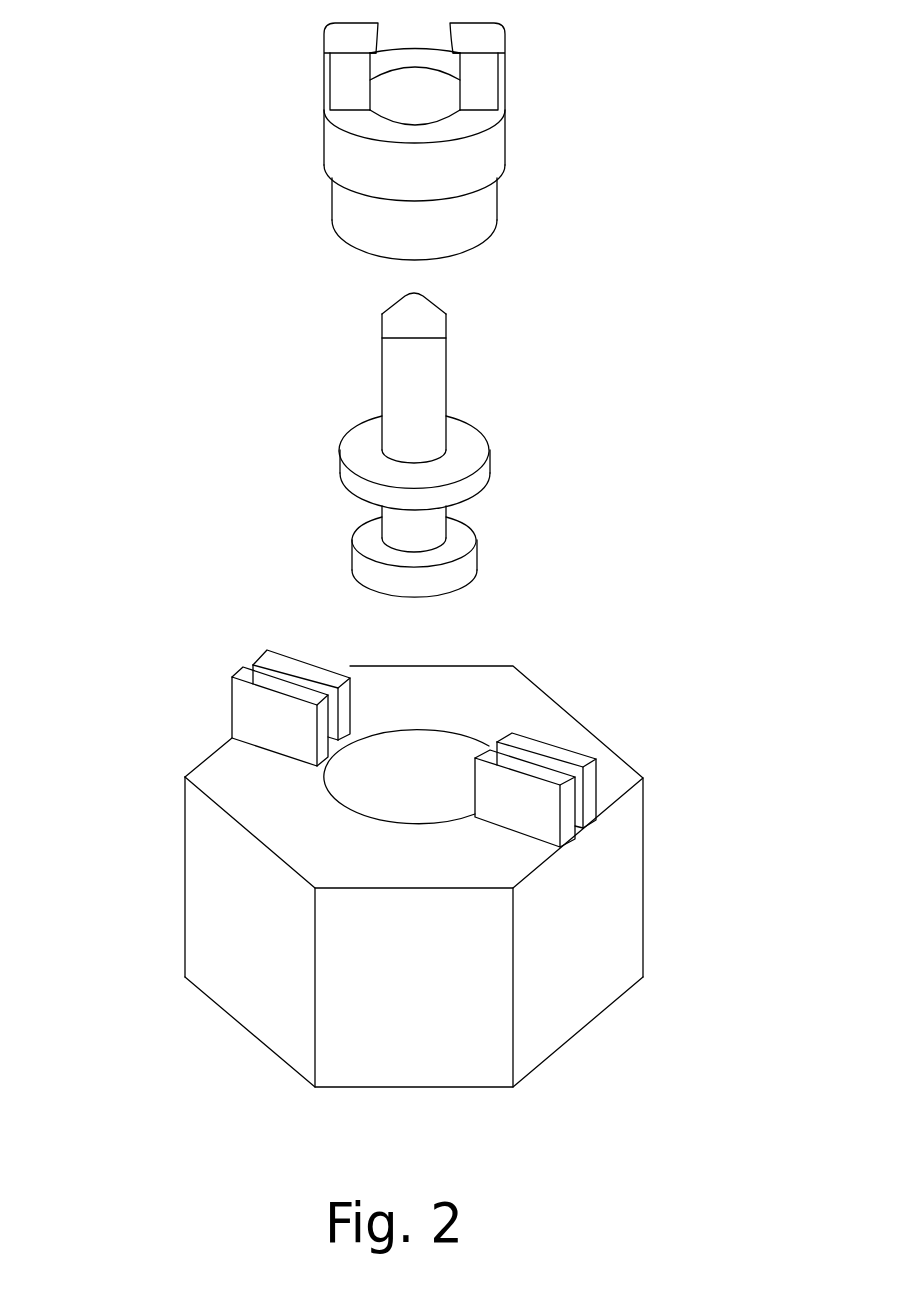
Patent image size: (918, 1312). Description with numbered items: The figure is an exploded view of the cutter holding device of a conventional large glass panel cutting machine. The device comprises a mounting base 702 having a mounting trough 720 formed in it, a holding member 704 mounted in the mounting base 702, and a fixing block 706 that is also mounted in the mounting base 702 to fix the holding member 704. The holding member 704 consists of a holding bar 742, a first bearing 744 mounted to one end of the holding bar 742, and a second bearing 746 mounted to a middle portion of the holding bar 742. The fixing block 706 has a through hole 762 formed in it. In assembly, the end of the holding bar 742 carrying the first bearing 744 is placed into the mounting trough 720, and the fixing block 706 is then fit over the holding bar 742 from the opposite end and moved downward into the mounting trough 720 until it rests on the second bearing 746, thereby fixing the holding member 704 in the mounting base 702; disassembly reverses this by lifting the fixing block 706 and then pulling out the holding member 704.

The mounting base 702 is at (424, 868).
The holding member 704 is at (418, 445).
The fixing block 706 is at (449, 141).
The mounting trough 720 is at (375, 788).
The holding bar 742 is at (400, 377).
The first bearing 744 is at (363, 540).
The second bearing 746 is at (363, 457).
The through hole 762 is at (405, 102).